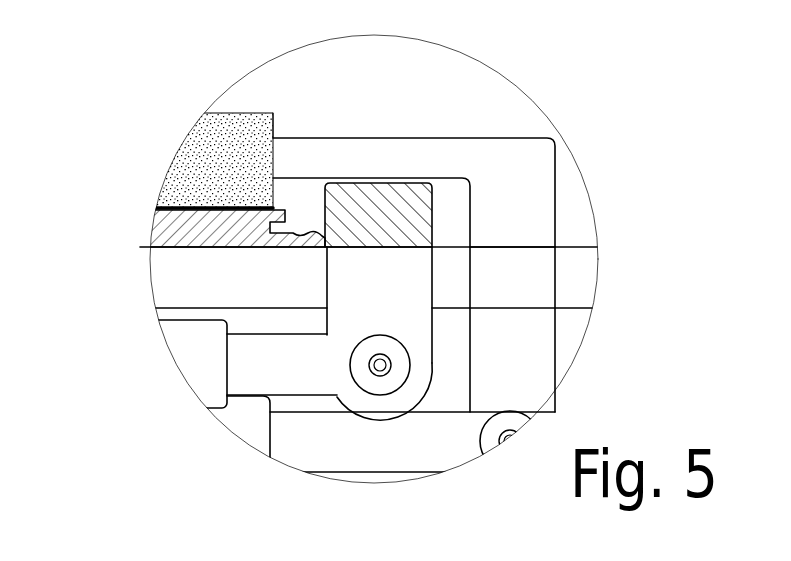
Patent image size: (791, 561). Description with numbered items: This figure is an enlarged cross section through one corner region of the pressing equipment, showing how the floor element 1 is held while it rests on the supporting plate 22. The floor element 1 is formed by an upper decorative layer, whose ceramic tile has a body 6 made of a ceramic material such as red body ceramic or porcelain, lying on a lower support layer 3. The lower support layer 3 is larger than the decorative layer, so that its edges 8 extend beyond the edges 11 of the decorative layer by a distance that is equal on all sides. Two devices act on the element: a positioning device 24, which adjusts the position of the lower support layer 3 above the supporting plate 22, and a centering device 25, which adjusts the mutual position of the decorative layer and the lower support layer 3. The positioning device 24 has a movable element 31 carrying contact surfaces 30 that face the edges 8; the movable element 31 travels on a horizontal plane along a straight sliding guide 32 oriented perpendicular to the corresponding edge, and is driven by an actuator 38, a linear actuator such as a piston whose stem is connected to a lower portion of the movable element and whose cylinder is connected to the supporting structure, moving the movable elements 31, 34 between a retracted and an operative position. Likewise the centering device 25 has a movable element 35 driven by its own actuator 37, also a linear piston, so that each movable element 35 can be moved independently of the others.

The floor element 1 is at (168, 136).
The lower support layer 3 is at (158, 225).
The body 6 is at (233, 143).
The edges 8 is at (328, 248).
The edges 11 is at (270, 130).
The supporting plate 22 is at (592, 247).
The positioning device 24 is at (427, 232).
The centering device 25 is at (531, 148).
The contact surfaces 30 is at (325, 203).
The movable element 31 is at (355, 290).
The sliding guide 32 is at (600, 307).
The movable element 34 is at (262, 147).
The movable element 35 is at (545, 190).
The actuator 37 is at (202, 360).
The actuator 38 is at (438, 445).